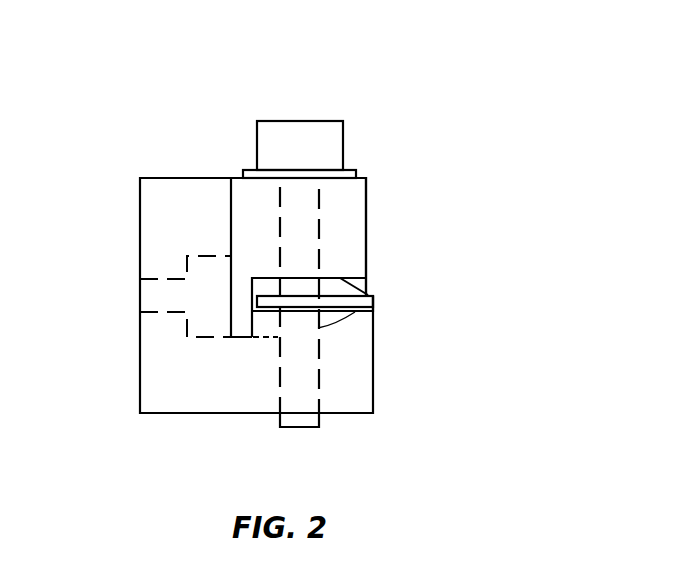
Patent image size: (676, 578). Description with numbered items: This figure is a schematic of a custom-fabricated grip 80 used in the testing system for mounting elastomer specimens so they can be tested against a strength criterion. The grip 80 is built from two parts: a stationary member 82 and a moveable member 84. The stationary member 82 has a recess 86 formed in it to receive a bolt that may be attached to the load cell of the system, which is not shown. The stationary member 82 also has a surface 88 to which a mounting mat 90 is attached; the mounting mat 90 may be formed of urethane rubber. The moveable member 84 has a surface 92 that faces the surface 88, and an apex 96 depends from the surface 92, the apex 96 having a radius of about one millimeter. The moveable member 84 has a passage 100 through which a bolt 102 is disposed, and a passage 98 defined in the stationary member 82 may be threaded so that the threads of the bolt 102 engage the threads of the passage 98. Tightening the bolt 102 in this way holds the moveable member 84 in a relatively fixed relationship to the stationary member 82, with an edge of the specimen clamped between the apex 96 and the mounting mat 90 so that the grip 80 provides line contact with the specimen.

The grip 80 is at (316, 84).
The stationary member 82 is at (152, 367).
The moveable member 84 is at (347, 227).
The recess 86 is at (152, 302).
The surface 88 is at (373, 310).
The mounting mat 90 is at (373, 302).
The surface 92 is at (366, 276).
The apex 96 is at (362, 283).
The passage 98 is at (302, 362).
The passage 100 is at (310, 197).
The bolt 102 is at (327, 145).